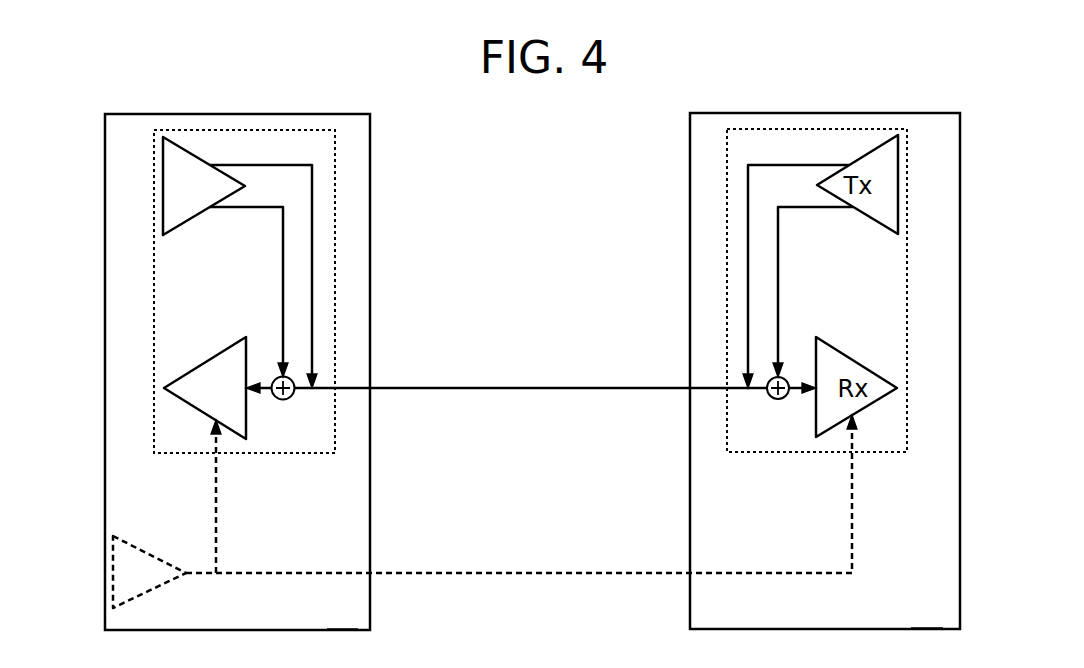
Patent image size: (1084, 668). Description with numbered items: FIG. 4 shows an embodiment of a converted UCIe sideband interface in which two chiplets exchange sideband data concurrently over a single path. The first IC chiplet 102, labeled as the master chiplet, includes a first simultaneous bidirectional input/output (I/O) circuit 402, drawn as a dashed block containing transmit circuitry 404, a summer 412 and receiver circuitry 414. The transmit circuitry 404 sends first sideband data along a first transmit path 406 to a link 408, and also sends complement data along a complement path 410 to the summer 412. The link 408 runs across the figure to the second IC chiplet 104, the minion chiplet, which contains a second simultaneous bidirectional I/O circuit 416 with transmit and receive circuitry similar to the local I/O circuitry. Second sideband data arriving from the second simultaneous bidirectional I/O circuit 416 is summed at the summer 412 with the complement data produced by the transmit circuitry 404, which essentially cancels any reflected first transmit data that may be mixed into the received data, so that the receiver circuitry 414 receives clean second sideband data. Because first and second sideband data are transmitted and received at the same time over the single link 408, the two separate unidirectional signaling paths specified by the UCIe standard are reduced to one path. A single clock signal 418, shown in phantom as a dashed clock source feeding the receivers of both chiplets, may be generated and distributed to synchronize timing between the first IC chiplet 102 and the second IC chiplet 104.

The first IC chiplet 102 is at (105, 148).
The second IC chiplet 104 is at (880, 113).
The first simultaneous bidirectional input/output (I/O) circuit 402 is at (154, 257).
The transmit circuitry 404 is at (185, 224).
The first transmit path 406 is at (312, 200).
The link 408 is at (500, 387).
The complement path 410 is at (283, 247).
The summer 412 is at (285, 399).
The receiver circuitry 414 is at (222, 350).
The second simultaneous bidirectional I/O circuit 416 is at (907, 248).
The single clock signal 418 is at (117, 567).